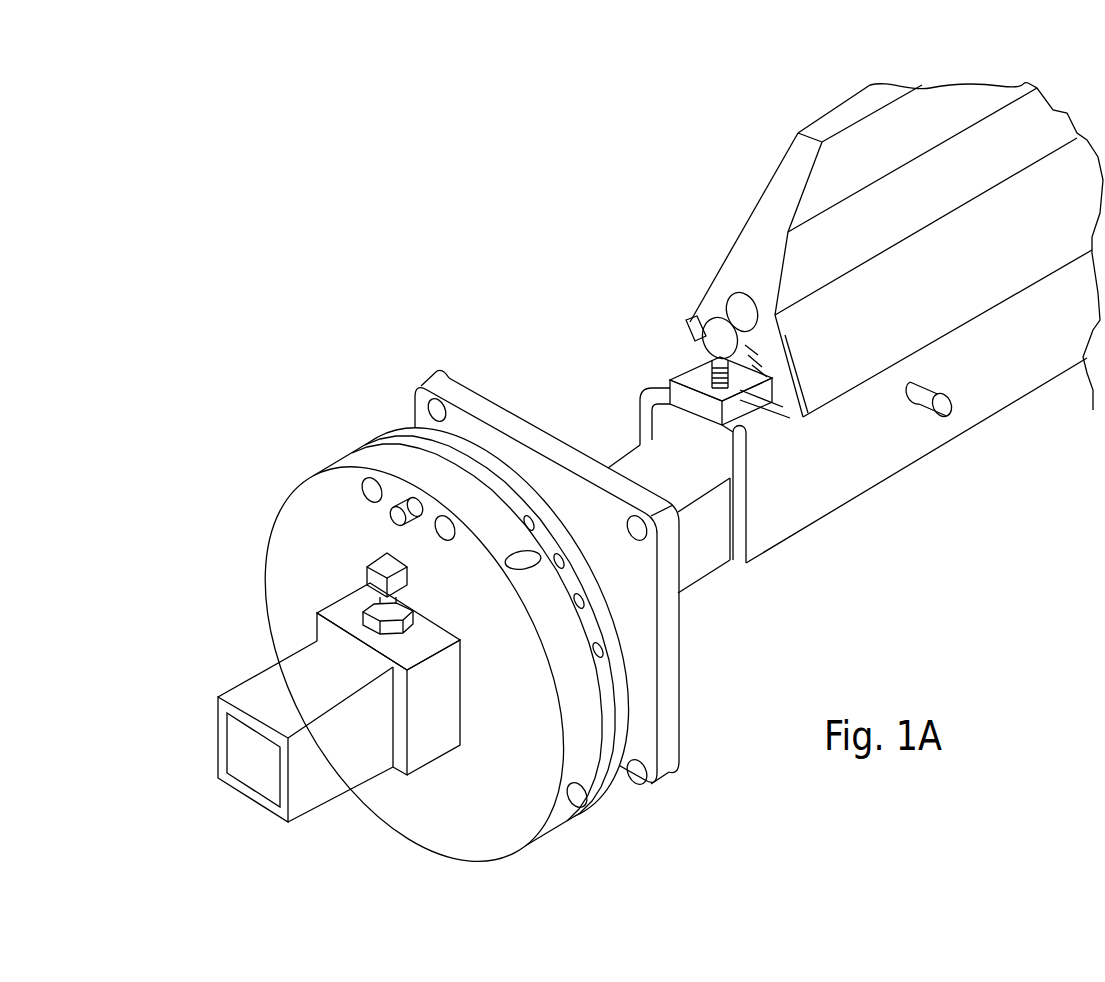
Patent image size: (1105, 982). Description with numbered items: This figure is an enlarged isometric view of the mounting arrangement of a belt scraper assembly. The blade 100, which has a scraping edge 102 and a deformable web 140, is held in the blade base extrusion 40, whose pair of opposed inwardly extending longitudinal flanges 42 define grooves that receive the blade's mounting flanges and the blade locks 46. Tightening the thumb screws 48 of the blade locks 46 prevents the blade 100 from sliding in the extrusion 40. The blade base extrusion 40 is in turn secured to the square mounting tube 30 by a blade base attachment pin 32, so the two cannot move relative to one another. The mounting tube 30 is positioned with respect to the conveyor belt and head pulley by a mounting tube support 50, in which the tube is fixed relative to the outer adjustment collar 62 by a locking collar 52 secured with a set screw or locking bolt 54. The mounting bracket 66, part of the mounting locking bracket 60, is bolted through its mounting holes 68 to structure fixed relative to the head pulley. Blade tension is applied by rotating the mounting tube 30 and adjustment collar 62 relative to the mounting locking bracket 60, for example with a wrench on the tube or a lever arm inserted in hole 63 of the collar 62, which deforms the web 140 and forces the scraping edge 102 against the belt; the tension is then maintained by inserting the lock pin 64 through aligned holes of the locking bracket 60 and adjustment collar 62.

The mounting tube 30 is at (236, 795).
The blade base attachment pin 32 is at (950, 408).
The blade base extrusion 40 is at (882, 478).
The longitudinal flanges 42 is at (750, 430).
The blade lock 46 is at (652, 412).
The thumb screw 48 is at (712, 340).
The mounting tube support 50 is at (268, 438).
The locking collar 52 is at (418, 720).
The locking bolt 54 is at (410, 580).
The mounting locking bracket 60 is at (415, 426).
The adjustment collar 62 is at (262, 580).
The hole 63 is at (580, 800).
The lock pin 64 is at (392, 514).
The mounting bracket 66 is at (679, 736).
The mounting holes 68 is at (428, 408).
The blade 100 is at (742, 206).
The scraping edge 102 is at (857, 120).
The web 140 is at (733, 252).